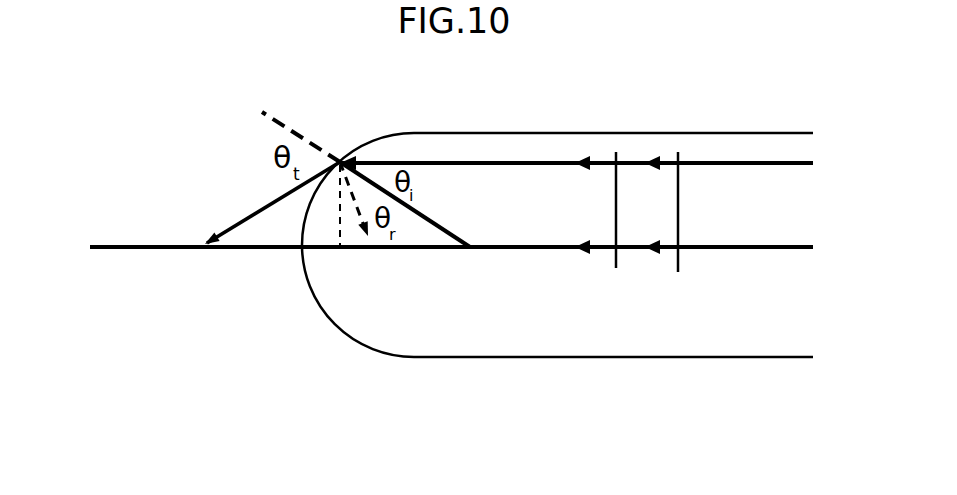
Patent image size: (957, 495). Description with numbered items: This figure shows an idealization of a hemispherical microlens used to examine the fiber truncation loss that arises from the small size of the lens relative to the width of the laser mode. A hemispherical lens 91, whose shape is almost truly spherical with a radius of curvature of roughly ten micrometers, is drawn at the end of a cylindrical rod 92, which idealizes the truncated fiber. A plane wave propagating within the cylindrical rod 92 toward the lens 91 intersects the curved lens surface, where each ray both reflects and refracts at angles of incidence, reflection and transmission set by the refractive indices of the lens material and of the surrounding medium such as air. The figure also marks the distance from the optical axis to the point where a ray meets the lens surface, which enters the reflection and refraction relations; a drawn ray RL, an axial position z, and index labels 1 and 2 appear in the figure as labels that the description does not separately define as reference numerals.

The hemispherical lens 91 is at (307, 283).
The cylindrical rod 92 is at (658, 345).
The incident light ray RL is at (368, 179).
The axial position z is at (328, 220).
The refractive index n1 (core) 1 is at (386, 330).
The refractive index n2 (surrounding medium) 2 is at (315, 297).